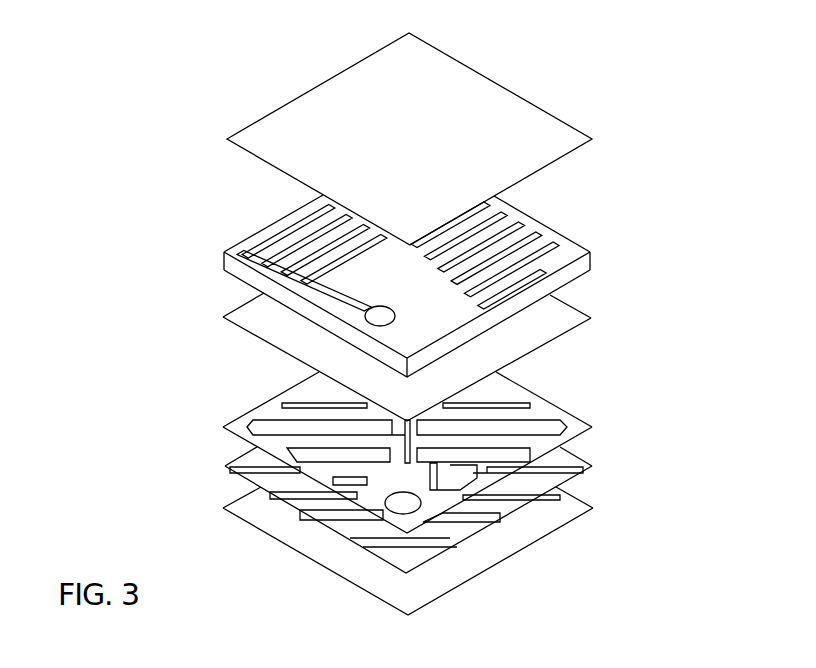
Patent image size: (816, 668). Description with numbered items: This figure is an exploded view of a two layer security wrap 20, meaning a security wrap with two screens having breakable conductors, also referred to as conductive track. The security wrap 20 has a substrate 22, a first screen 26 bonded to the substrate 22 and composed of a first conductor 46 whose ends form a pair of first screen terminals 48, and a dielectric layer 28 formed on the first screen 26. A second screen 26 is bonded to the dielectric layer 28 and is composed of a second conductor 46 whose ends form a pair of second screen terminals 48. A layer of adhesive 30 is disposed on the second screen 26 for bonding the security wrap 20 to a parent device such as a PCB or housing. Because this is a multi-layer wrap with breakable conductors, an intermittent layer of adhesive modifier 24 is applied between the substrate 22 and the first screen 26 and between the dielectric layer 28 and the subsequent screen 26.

The security wrap 20 is at (216, 102).
The substrate 22 is at (540, 525).
The intermittent layer of adhesive modifier 24 is at (235, 268).
The screen 26 is at (461, 346).
The dielectric layer 28 is at (253, 330).
The layer of adhesive 30 is at (512, 118).
The conductor 46 is at (548, 240).
The screen terminals 48 is at (384, 316).